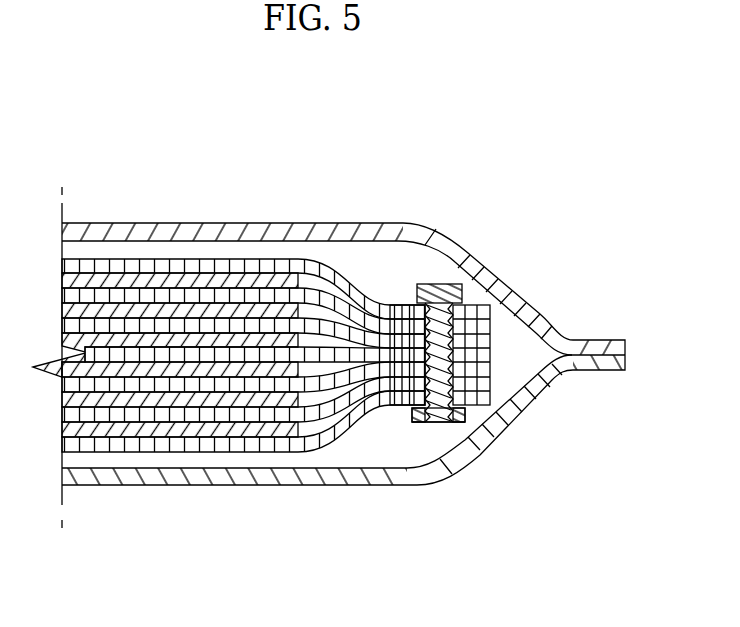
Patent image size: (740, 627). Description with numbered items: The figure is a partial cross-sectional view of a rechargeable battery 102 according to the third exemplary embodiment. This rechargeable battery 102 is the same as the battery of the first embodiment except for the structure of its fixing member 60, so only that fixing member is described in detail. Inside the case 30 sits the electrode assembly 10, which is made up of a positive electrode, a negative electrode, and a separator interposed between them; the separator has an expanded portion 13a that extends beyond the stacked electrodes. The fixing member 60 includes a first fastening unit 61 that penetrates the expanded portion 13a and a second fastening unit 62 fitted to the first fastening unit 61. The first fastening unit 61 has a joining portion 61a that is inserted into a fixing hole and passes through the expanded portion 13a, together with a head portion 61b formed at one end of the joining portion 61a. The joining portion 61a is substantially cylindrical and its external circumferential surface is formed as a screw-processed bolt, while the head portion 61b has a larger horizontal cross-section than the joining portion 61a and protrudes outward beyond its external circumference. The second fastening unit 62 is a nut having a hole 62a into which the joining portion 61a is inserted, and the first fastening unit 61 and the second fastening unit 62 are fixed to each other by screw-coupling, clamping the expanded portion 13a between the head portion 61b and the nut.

The rechargeable battery 102 is at (313, 138).
The electrode assembly 10 is at (199, 248).
The expanded portion 13a is at (373, 425).
The case 30 is at (578, 339).
The fixing member 60 is at (630, 399).
The first fastening unit 61 is at (464, 340).
The joining portion 61a is at (490, 323).
The head portion 61b is at (432, 284).
The second fastening unit 62 is at (480, 417).
The hole 62a is at (437, 422).